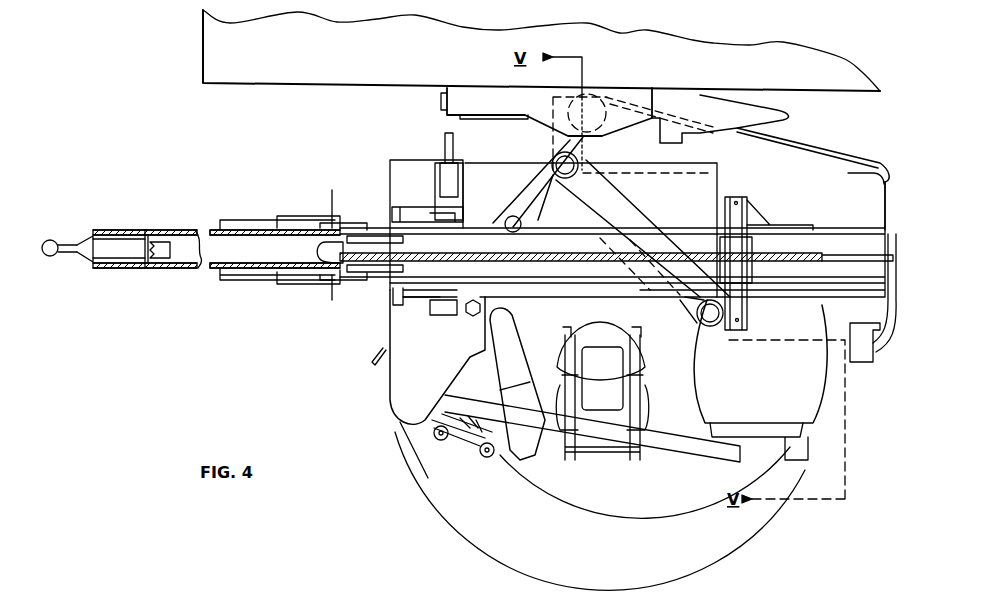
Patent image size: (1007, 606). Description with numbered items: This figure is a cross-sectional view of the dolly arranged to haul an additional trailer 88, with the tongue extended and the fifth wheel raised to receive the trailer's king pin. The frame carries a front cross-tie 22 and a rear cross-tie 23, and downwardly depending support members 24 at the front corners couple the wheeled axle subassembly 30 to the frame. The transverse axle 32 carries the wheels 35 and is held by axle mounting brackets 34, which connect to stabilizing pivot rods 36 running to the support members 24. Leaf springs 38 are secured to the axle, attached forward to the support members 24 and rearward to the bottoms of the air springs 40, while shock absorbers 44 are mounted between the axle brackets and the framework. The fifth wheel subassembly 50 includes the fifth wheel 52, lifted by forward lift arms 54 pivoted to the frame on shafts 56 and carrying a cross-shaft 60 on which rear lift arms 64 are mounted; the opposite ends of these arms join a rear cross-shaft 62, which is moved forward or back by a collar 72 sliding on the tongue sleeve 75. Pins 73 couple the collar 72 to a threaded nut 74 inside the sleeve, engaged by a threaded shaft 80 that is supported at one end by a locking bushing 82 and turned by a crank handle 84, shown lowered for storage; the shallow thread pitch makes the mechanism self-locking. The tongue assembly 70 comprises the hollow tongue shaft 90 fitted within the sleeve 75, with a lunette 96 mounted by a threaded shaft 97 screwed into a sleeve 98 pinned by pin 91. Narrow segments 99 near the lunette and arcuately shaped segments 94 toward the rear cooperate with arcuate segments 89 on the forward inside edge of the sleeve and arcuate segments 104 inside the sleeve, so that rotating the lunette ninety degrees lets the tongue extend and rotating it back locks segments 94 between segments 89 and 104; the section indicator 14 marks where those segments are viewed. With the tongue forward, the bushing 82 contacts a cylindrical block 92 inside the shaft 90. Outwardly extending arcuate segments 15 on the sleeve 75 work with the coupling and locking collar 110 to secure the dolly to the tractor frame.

The section line 14 is at (347, 195).
The arcuate segments 15 is at (433, 210).
The front cross-tie 22 is at (464, 192).
The rear cross-tie 23 is at (886, 199).
The support members 24 is at (388, 395).
The wheeled axle subassembly 30 is at (652, 380).
The transverse axle 32 is at (602, 378).
The axle mounting brackets 34 is at (597, 330).
The wheels 35 is at (488, 546).
The stabilizing pivot rods 36 is at (455, 458).
The leaf springs 38 is at (660, 455).
The air springs 40 is at (812, 410).
The shock absorbers 44 is at (505, 355).
The fifth wheel subassembly 50 is at (430, 106).
The fifth wheel 52 is at (790, 110).
The forward lift arm 54 is at (548, 185).
The shafts 56 is at (508, 217).
The cross-shaft 60 is at (571, 174).
The rear cross-shaft 62 is at (710, 325).
The rear lift arm 64 is at (630, 212).
The tongue assembly 70 is at (200, 212).
The collar 72 is at (795, 224).
The pins 73 is at (742, 200).
The threaded nut 74 is at (752, 245).
The tongue sleeve 75 is at (250, 222).
The threaded shaft 80 is at (535, 255).
The locking bushing 82 is at (322, 251).
The crank handle 84 is at (884, 348).
The trailer 88 is at (203, 45).
The arcuate segments 89 is at (210, 226).
The tongue shaft 90 is at (198, 268).
The pin 91 is at (138, 258).
The cylindrical block 92 is at (404, 241).
The arcuately shaped segments 94 is at (290, 218).
The lunette 96 is at (50, 240).
The threaded shaft 97 is at (172, 258).
The sleeve 98 is at (137, 240).
The narrow segments 99 is at (152, 228).
The arcuate segments 104 is at (332, 190).
The coupling and locking collar 110 is at (410, 304).